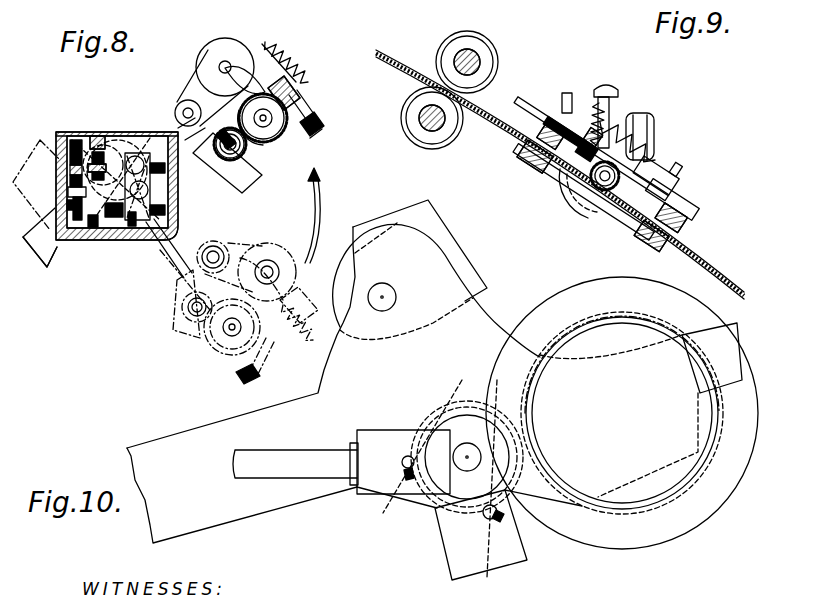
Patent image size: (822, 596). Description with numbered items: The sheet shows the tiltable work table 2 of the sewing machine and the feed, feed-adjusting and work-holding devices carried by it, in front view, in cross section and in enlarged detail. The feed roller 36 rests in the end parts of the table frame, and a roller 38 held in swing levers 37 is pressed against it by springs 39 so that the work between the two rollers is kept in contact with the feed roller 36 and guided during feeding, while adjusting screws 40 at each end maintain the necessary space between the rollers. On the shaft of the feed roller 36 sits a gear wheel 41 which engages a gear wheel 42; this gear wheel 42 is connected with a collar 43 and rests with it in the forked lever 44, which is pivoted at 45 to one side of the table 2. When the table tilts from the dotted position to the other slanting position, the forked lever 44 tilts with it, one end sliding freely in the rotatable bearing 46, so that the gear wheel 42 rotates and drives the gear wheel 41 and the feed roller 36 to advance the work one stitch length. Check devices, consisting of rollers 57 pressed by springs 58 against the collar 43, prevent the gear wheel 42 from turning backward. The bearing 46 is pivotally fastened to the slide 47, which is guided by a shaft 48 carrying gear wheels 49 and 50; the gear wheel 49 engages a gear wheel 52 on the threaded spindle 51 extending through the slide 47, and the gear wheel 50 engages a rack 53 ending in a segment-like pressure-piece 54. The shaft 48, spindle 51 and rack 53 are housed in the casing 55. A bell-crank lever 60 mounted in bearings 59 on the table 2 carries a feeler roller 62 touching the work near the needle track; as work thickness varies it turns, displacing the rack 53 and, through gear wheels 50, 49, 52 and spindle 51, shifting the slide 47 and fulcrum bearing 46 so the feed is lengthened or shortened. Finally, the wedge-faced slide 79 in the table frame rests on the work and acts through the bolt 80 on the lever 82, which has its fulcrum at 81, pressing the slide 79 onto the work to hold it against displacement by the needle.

In FIG. 8, the work table 2 is at (46, 262).
In FIG. 9, the work table 2 is at (528, 166).
In FIG. 10, the work table 2 is at (354, 385).
In FIG. 8, the feed roller 36 is at (282, 142).
In FIG. 9, the feed roller 36 is at (446, 128).
In FIG. 10, the feed roller 36 is at (680, 516).
In FIG. 8, the swing levers 37 is at (198, 84).
In FIG. 10, the swing levers 37 is at (466, 272).
In FIG. 8, the roller 38 is at (224, 48).
In FIG. 9, the roller 38 is at (485, 60).
In FIG. 8, the springs 39 is at (294, 68).
In FIG. 8, the adjusting screws 40 is at (318, 117).
In FIG. 10, the gear wheel 41 is at (705, 470).
In FIG. 10, the gear wheel 42 is at (562, 508).
In FIG. 10, the collar 43 is at (455, 398).
In FIG. 8, the forked lever 44 is at (203, 168).
In FIG. 10, the forked lever 44 is at (368, 478).
In FIG. 8, the pivot bolt 45 is at (232, 160).
In FIG. 8, the bearing 46 is at (122, 150).
In FIG. 8, the slide 47 is at (150, 238).
In FIG. 8, the shaft 48 is at (164, 140).
In FIG. 8, the gear wheel 49 is at (76, 140).
In FIG. 8, the gear wheel 50 is at (100, 232).
In FIG. 8, the spindle 51 is at (140, 230).
In FIG. 8, the gear wheel 52 is at (66, 208).
In FIG. 8, the rack 53 is at (98, 135).
In FIG. 8, the pressure-piece 54 is at (52, 150).
In FIG. 8, the casing 55 is at (181, 222).
In FIG. 8, the rollers 57 is at (255, 170).
In FIG. 10, the rollers 57 is at (395, 445).
In FIG. 10, the springs 58 is at (408, 472).
In FIG. 9, the bearings 59 is at (655, 160).
In FIG. 9, the bell-crank lever 60 is at (662, 168).
In FIG. 9, the feeler roller 62 is at (607, 192).
In FIG. 9, the slide 79 is at (664, 214).
In FIG. 9, the bolt 80 is at (525, 104).
In FIG. 9, the fulcrum 81 is at (578, 98).
In FIG. 9, the lever 82 is at (566, 102).